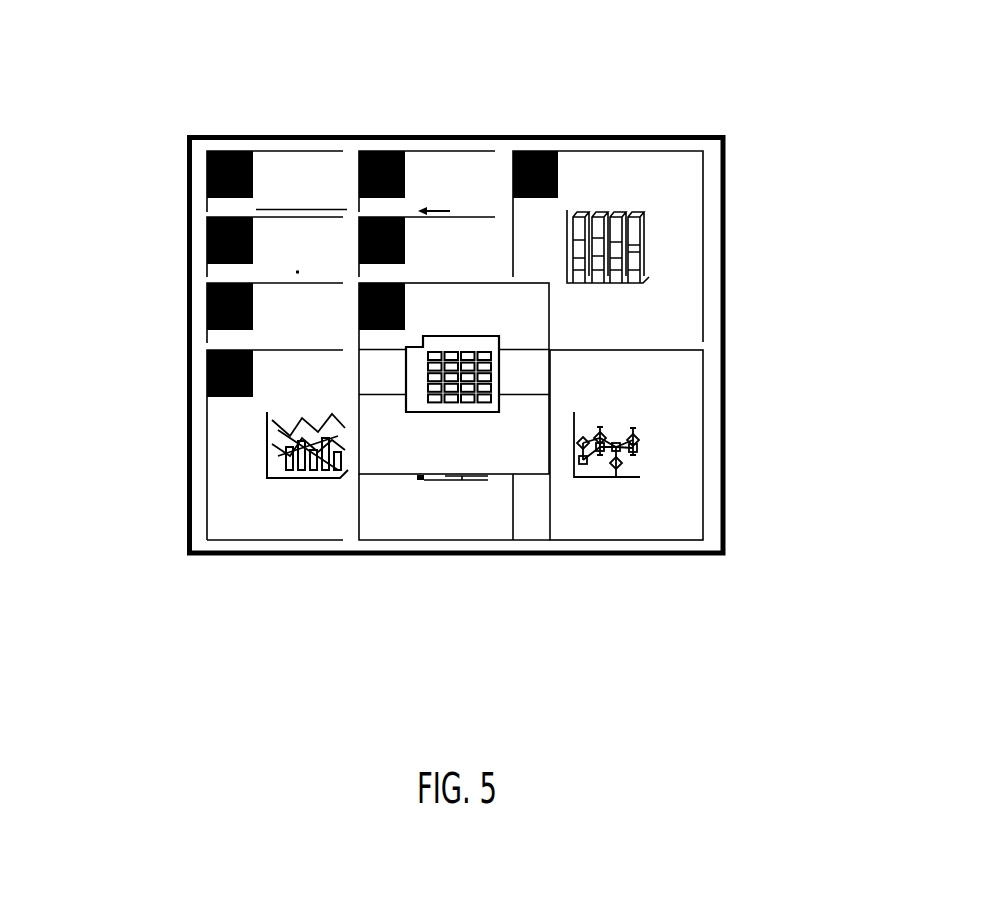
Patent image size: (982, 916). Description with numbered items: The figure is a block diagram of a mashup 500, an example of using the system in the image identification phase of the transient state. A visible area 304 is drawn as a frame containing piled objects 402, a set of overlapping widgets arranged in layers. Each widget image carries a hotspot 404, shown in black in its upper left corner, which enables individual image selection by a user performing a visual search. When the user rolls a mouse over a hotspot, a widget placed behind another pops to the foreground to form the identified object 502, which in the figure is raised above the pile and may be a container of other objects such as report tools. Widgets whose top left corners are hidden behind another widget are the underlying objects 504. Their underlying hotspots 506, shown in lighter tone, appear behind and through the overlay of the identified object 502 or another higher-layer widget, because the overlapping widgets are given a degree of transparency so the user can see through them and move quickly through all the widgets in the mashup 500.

The visible area 304 is at (176, 358).
The piled objects 402 is at (477, 354).
The hotspot 404 is at (200, 141).
The mashup 500 is at (426, 374).
The identified object 502 is at (433, 489).
The underlying objects 504 is at (515, 534).
The underlying hotspots 506 is at (409, 403).